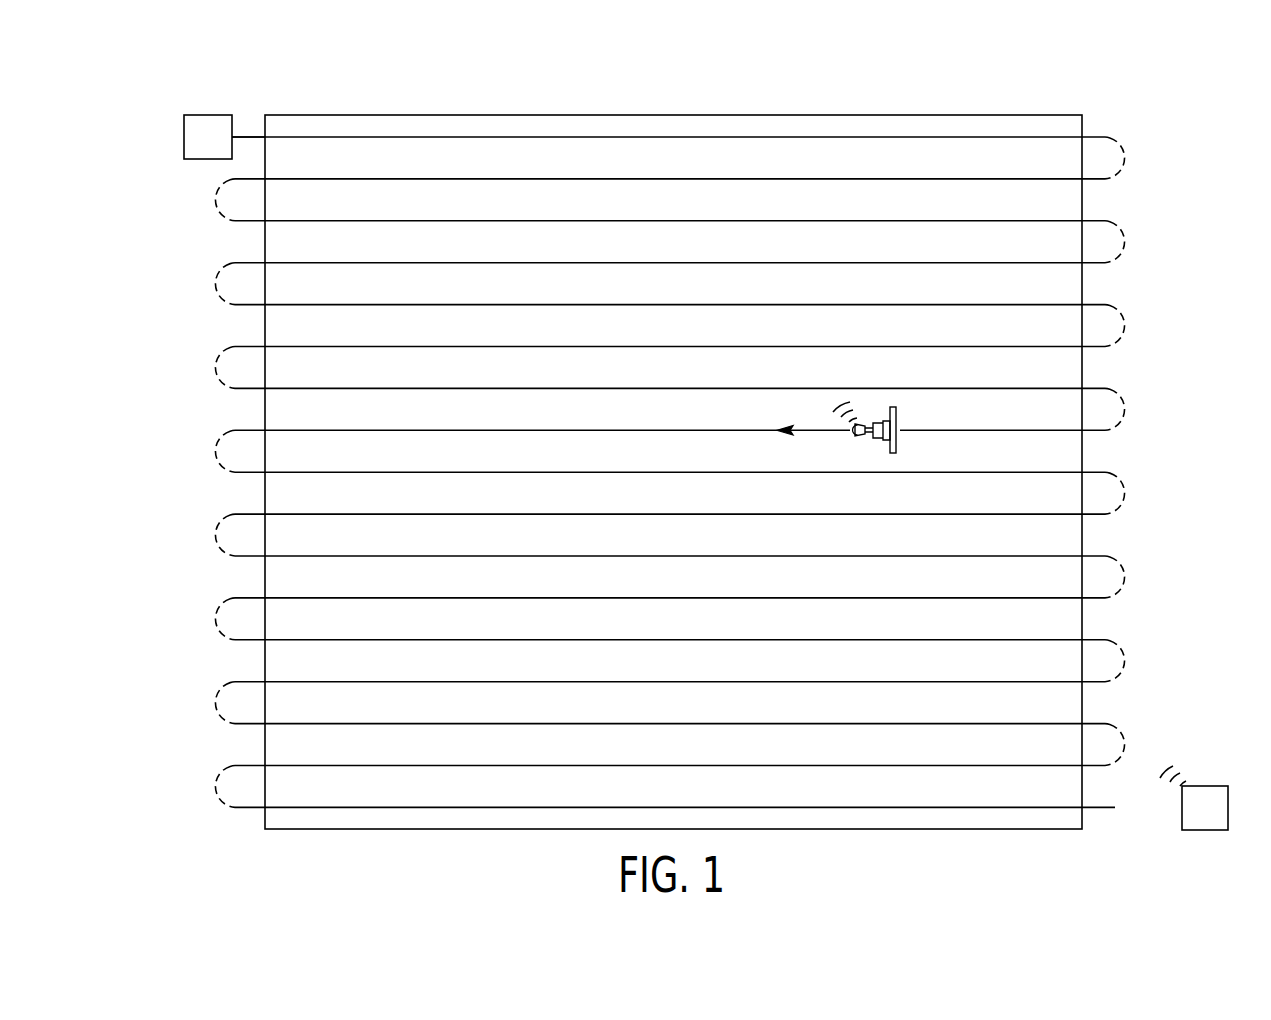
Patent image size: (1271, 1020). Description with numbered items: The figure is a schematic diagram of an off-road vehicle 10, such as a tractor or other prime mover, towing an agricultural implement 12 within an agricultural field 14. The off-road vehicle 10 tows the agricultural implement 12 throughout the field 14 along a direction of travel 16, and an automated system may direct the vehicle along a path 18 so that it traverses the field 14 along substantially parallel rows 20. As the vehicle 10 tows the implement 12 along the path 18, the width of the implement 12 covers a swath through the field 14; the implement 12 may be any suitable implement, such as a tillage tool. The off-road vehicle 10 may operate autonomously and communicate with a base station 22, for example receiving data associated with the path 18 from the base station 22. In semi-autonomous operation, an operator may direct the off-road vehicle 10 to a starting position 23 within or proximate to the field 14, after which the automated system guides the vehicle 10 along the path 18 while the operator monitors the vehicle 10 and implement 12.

The off-road vehicle 10 is at (873, 424).
The agricultural implement 12 is at (896, 433).
The agricultural field 14 is at (889, 785).
The direction of travel 16 is at (818, 433).
The path 18 is at (243, 136).
The substantially parallel rows 20 is at (1100, 137).
The base station 22 is at (1205, 786).
The starting position 23 is at (183, 134).